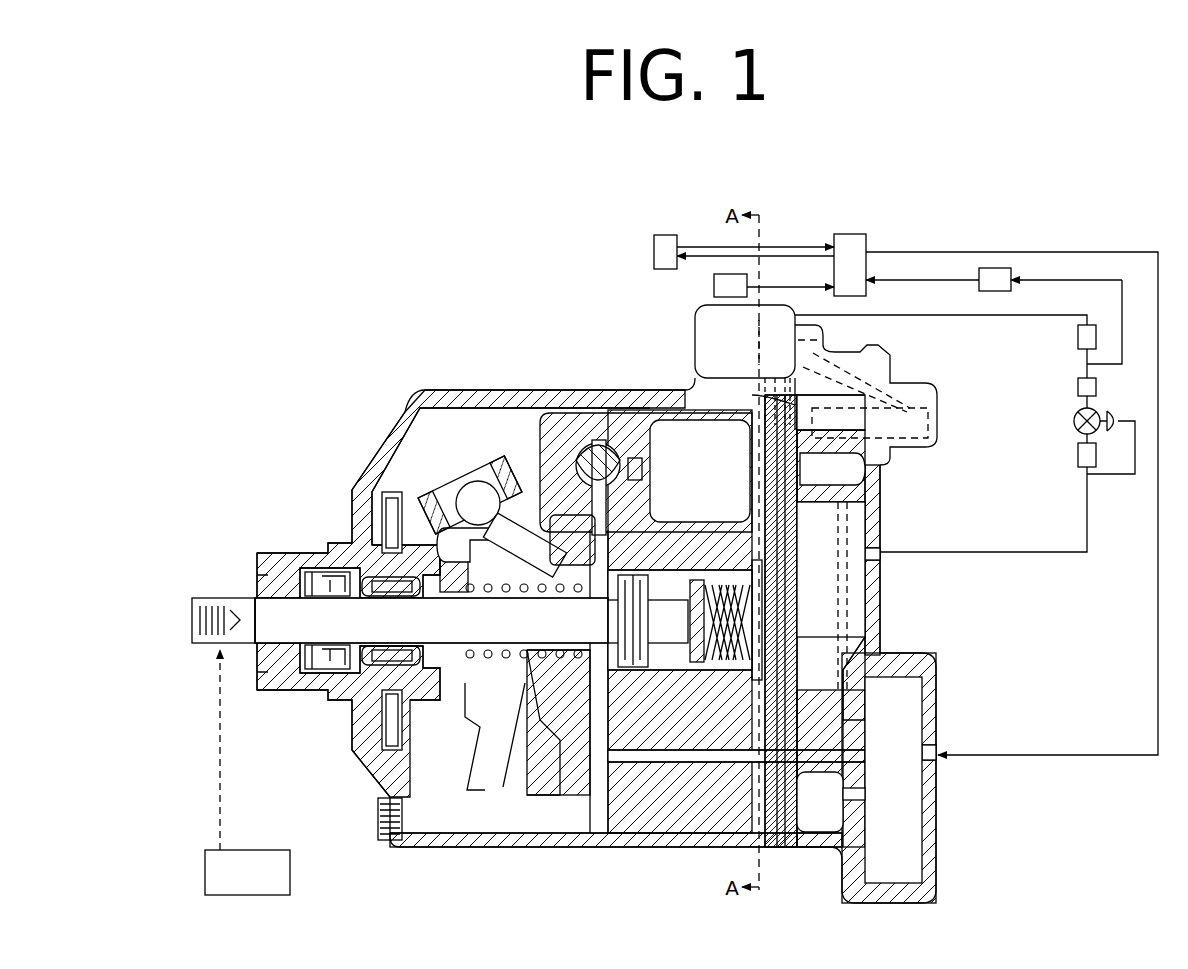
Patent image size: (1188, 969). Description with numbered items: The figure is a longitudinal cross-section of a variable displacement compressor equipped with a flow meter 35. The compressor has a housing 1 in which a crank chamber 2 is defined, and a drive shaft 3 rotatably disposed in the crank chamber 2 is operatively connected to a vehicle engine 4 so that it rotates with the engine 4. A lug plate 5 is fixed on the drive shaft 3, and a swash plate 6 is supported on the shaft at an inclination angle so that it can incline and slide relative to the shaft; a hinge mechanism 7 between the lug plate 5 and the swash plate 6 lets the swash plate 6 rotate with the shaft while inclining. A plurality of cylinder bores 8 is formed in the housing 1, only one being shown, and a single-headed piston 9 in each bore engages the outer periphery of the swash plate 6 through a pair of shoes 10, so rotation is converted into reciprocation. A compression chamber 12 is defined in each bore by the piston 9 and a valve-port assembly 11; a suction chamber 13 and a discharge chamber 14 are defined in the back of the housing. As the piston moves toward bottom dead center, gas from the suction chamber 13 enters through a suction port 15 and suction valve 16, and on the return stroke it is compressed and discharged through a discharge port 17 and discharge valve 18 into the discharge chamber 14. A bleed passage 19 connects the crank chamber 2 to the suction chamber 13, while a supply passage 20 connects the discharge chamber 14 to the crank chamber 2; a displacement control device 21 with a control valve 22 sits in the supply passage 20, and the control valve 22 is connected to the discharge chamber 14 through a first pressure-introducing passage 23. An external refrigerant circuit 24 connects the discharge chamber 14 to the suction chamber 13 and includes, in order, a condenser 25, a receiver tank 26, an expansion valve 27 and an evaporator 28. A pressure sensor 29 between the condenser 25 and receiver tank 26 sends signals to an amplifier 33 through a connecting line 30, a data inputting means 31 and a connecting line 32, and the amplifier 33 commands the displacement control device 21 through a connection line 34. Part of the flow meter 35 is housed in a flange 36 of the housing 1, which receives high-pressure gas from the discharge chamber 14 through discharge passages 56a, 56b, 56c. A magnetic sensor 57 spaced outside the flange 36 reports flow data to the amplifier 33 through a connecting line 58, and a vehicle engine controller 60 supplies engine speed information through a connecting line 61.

The housing 1 is at (596, 652).
The crank chamber 2 is at (456, 824).
The drive shaft 3 is at (497, 632).
The engine 4 is at (234, 884).
The lug plate 5 is at (408, 505).
The swash plate 6 is at (505, 740).
The hinge mechanism 7 is at (455, 470).
The cylinder bores 8 is at (662, 425).
The single-headed piston 9 is at (646, 430).
The shoes 10 is at (605, 410).
The valve-port assembly 11 is at (771, 860).
The compression chambers 12 is at (700, 400).
The suction chamber 13 is at (800, 630).
The discharge chamber 14 is at (803, 812).
The suction port 15 is at (795, 518).
The suction valve 16 is at (750, 486).
The discharge port 17 is at (752, 440).
The discharge valve 18 is at (845, 470).
The bleed passage 19 is at (690, 690).
The supply passage 20 is at (702, 762).
The displacement control device 21 is at (938, 808).
The control valve 22 is at (880, 764).
The first pressure-introducing passage 23 is at (847, 605).
The external refrigerant circuit 24 is at (965, 433).
The condenser 25 is at (1078, 337).
The receiver tank 26 is at (1074, 400).
The expansion valve 27 is at (1075, 430).
The evaporator 28 is at (1078, 462).
The pressure sensor 29 is at (1080, 366).
The connecting line 30 is at (1118, 302).
The data inputting means 31 is at (990, 268).
The connecting line 32 is at (920, 278).
The amplifier 33 is at (838, 279).
The connection line 34 is at (1158, 655).
The flow meter 35 is at (655, 290).
The flange 36 is at (695, 325).
The discharge passage 56a is at (890, 455).
The discharge passage 56b is at (930, 425).
The discharge passage 56c is at (875, 365).
The magnetic sensor 57 is at (720, 273).
The connecting line 58 is at (840, 287).
The vehicle engine controller 60 is at (655, 240).
The connecting line 61 is at (806, 247).